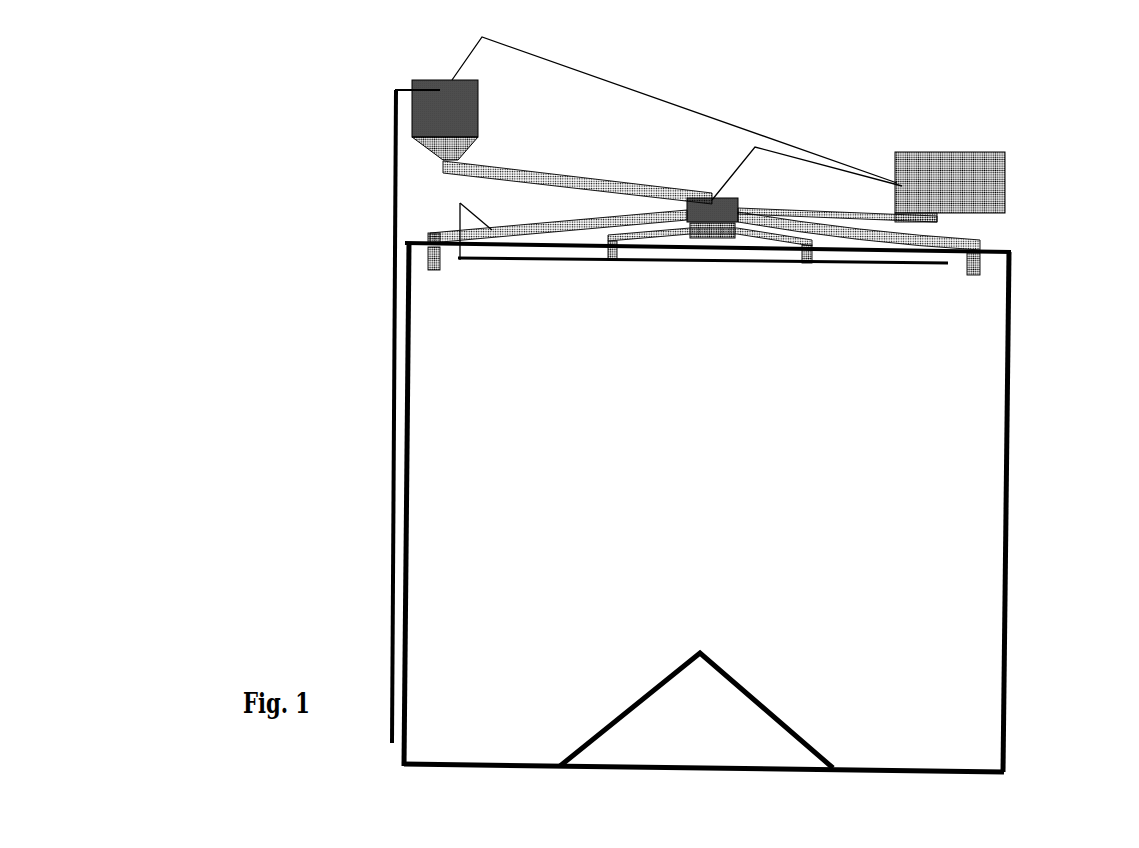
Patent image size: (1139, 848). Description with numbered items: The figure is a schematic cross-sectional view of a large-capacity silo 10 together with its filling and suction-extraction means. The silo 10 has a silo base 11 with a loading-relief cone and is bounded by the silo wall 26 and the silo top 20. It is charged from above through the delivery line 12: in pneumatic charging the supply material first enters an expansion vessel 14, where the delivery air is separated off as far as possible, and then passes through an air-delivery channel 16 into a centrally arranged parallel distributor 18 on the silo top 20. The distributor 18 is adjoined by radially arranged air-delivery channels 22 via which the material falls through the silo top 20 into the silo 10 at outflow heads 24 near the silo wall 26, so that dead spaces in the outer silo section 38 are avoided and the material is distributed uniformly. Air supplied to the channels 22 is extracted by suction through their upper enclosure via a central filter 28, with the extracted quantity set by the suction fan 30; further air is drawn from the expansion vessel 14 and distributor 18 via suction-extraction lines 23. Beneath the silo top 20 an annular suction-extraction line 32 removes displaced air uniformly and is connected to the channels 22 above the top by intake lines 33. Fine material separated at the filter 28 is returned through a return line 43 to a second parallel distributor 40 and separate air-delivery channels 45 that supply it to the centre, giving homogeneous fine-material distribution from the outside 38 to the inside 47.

The silo 10 is at (1012, 658).
The silo base 11 is at (813, 747).
The delivery line 12 is at (390, 517).
The expansion vessel 14 is at (418, 97).
The air-delivery channel 16 is at (535, 167).
The parallel distributor 18 is at (733, 198).
The silo top 20 is at (992, 255).
The air-delivery channels 22 is at (618, 217).
The suction-extraction lines 23 is at (865, 177).
The outflow heads 24 is at (438, 270).
The silo wall 26 is at (406, 640).
The central filter 28 is at (1010, 187).
The suction fan 30 is at (1014, 171).
The annular suction-extraction line 32 is at (710, 265).
The intake lines 33 is at (457, 215).
The outer silo section 38 is at (430, 593).
The second parallel distributor 40 is at (712, 238).
The return line 43 is at (853, 237).
The separate air-delivery channels 45 is at (803, 263).
The inside 47 is at (702, 607).